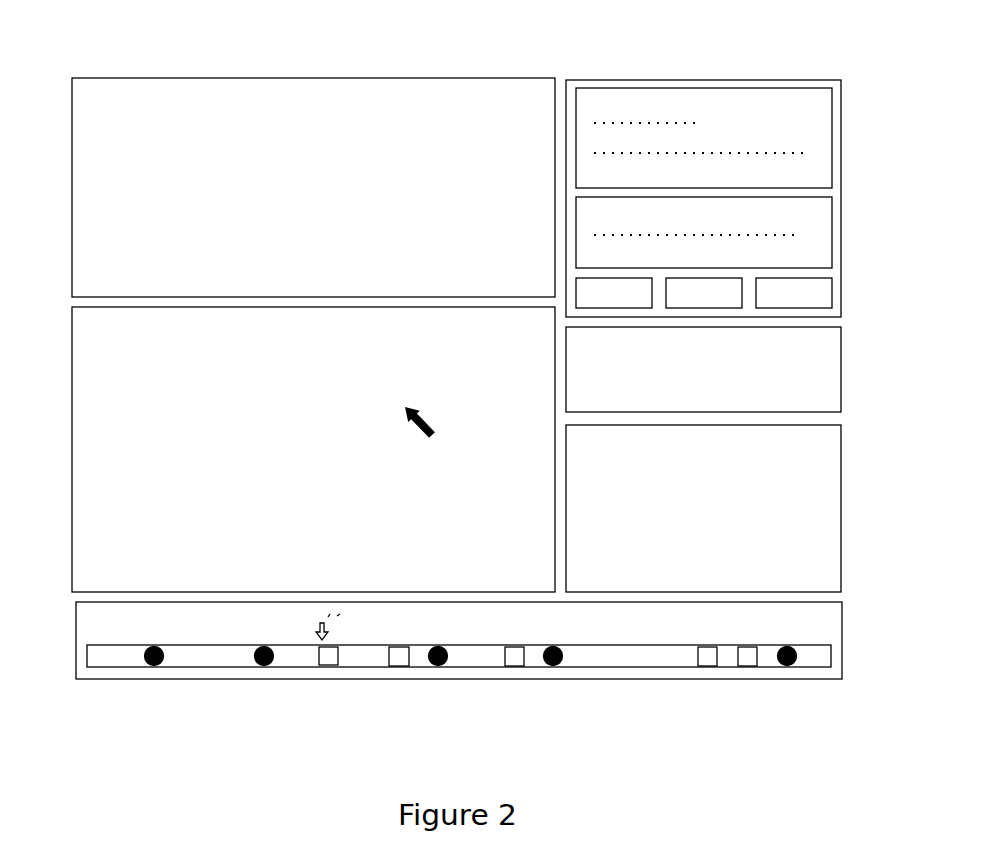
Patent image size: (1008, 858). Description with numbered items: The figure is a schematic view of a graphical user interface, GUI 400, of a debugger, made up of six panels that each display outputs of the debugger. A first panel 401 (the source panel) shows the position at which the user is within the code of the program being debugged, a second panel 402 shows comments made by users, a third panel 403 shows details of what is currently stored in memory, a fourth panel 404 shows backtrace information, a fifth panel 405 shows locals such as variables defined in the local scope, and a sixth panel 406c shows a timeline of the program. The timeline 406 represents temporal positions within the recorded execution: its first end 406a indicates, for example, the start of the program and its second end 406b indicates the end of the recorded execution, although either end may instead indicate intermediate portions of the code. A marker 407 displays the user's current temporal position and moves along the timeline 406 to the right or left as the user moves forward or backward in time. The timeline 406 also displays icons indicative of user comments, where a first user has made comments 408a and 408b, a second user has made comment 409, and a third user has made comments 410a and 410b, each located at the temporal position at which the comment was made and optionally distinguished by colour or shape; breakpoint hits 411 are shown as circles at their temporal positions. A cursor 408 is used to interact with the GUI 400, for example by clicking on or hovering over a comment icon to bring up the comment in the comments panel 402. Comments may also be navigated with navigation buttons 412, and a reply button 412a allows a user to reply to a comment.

The graphical user interface 400 is at (128, 68).
The first panel 401 is at (132, 148).
The second panel 402 is at (778, 122).
The third panel 403 is at (143, 418).
The fourth panel 404 is at (795, 378).
The fifth panel 405 is at (777, 493).
The timeline 406 is at (133, 655).
The first end of the timeline 406a is at (92, 690).
The second end of the timeline 406b is at (832, 686).
The sixth panel 406c is at (138, 617).
The marker 407 is at (320, 623).
The cursor 408 is at (403, 428).
The comment icon 408a is at (328, 666).
The comment icon 408b is at (515, 666).
The comment icon 409 is at (399, 666).
The comment icon 410a is at (708, 666).
The comment icon 410b is at (748, 666).
The breakpoint hits 411 is at (154, 666).
The navigation buttons 412 is at (613, 290).
The reply button 412a is at (717, 297).